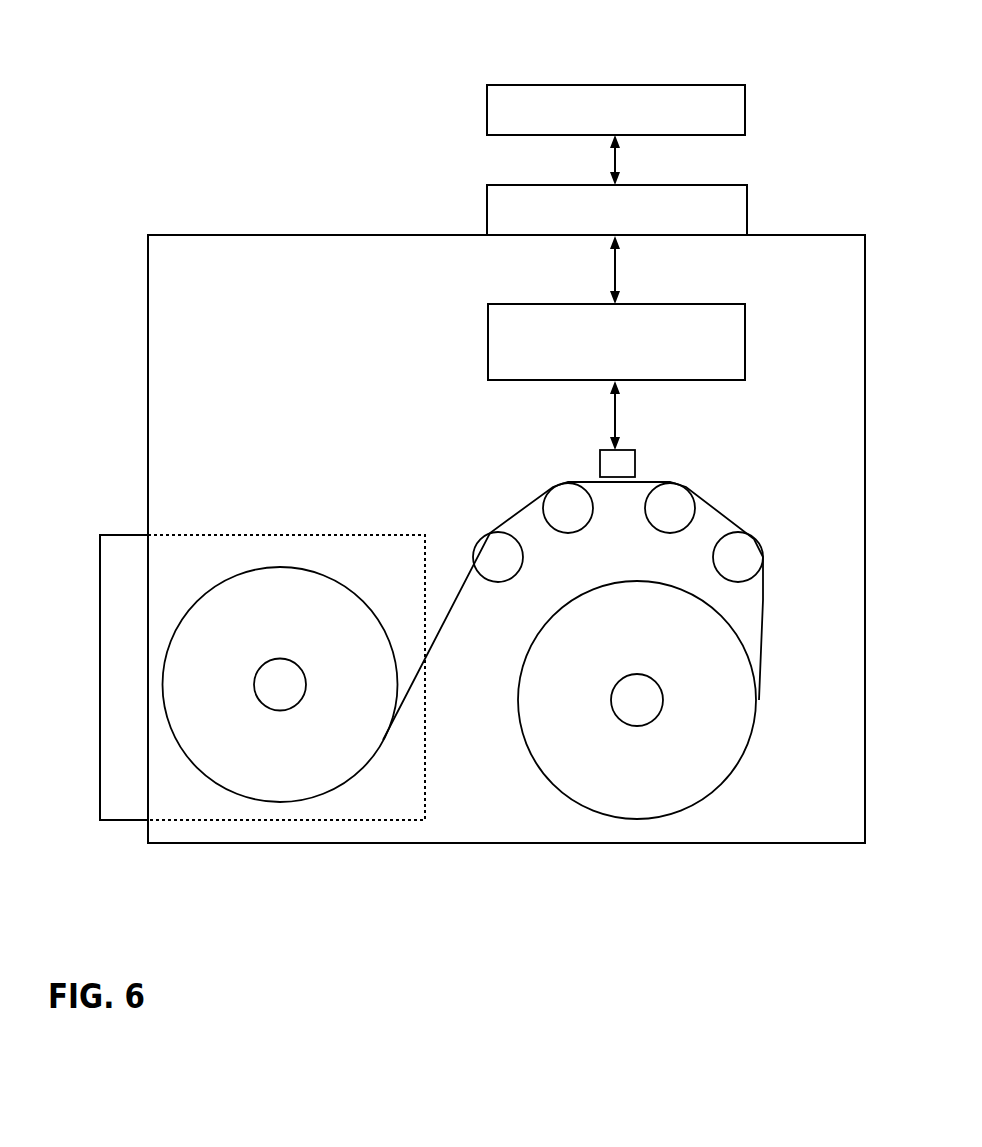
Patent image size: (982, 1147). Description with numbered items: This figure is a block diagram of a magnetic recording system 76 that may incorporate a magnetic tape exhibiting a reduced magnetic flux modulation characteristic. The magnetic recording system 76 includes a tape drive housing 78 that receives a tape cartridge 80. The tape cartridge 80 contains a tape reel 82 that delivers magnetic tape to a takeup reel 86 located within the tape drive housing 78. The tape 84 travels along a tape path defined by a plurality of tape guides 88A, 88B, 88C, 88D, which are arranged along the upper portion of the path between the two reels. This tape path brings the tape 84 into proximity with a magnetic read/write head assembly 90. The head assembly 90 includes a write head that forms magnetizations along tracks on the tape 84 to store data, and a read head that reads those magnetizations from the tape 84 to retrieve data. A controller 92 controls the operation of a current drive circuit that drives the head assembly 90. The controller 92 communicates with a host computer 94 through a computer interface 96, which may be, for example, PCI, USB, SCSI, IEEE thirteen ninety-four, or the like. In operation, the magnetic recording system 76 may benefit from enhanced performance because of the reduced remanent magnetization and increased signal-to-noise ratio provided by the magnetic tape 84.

The magnetic recording system 76 is at (180, 198).
The tape drive housing 78 is at (512, 843).
The tape cartridge 80 is at (117, 528).
The tape reel 82 is at (280, 802).
The tape 84 is at (458, 600).
The takeup reel 86 is at (682, 818).
The tape guide 88A is at (500, 540).
The tape guide 88B is at (567, 490).
The tape guide 88C is at (678, 490).
The tape guide 88D is at (747, 555).
The magnetic read/write head assembly 90 is at (635, 463).
The controller 92 is at (630, 366).
The host computer 94 is at (613, 84).
The computer interface 96 is at (487, 210).